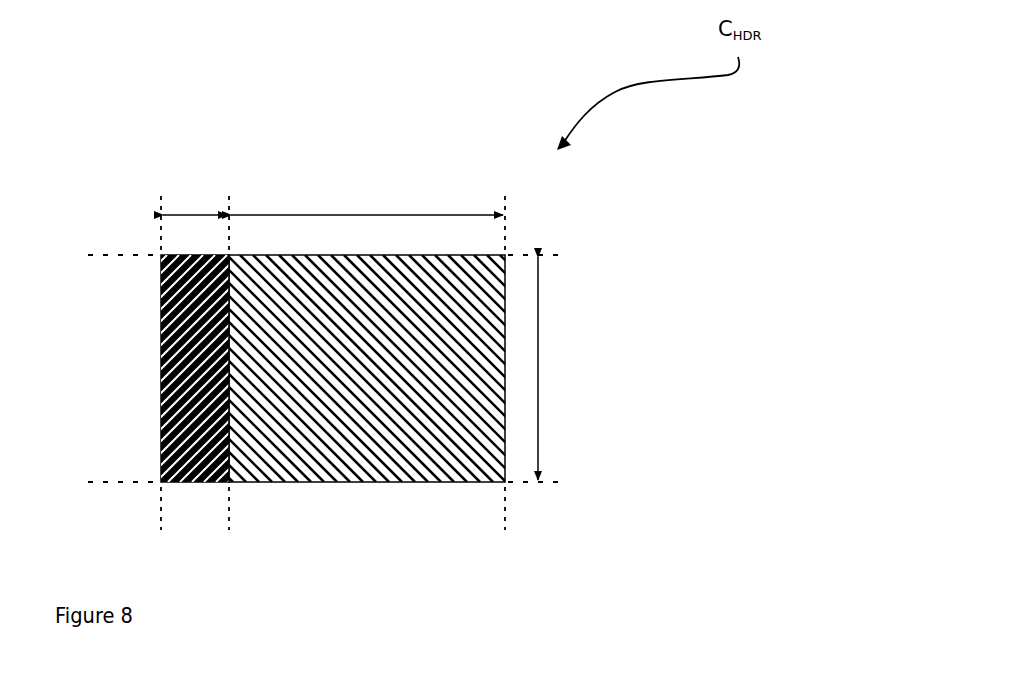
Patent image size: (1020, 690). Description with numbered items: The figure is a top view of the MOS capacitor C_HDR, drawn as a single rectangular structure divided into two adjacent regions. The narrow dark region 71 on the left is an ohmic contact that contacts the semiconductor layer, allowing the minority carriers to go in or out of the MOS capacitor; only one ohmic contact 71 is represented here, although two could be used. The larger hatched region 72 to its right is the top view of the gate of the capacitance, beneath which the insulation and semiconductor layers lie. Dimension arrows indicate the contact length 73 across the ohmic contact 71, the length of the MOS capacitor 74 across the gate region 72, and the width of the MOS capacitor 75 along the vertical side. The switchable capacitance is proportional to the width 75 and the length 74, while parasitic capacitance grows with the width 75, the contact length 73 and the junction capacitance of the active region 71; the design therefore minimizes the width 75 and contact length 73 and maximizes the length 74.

The ohmic contact 71 is at (198, 483).
The gate region 72 is at (348, 483).
The contact length 73 is at (195, 197).
The length of the MOS capacitor 74 is at (367, 197).
The width of the MOS capacitor 75 is at (561, 368).